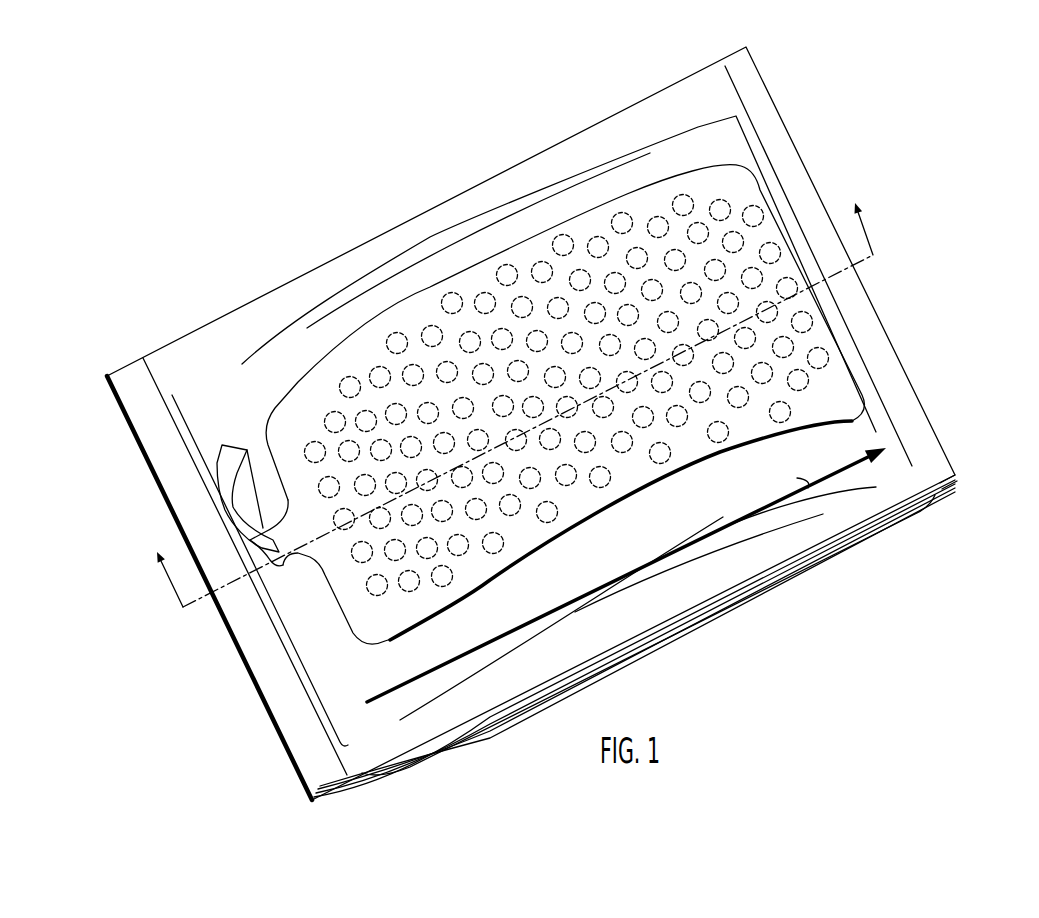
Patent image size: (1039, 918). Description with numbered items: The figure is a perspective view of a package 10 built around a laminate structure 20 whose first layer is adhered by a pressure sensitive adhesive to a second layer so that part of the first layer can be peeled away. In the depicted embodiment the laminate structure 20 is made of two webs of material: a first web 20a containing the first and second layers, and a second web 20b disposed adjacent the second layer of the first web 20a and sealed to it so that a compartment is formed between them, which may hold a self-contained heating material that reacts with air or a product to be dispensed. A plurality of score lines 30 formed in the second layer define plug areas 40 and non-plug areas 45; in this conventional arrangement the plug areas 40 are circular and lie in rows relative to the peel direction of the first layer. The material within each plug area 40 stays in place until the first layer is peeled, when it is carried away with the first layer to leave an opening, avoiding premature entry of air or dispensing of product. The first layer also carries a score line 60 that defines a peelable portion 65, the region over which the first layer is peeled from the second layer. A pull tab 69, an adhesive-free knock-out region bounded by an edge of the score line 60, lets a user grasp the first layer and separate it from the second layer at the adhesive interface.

The package 10 is at (846, 90).
The laminate structure 20 is at (262, 322).
The first web 20a is at (958, 477).
The second web 20b is at (962, 484).
The score lines 30 is at (396, 332).
The plug areas 40 is at (449, 294).
The non-plug areas 45 is at (368, 360).
The score line 60 is at (527, 552).
The peelable portion 65 is at (321, 622).
The pull tab 69 is at (282, 563).